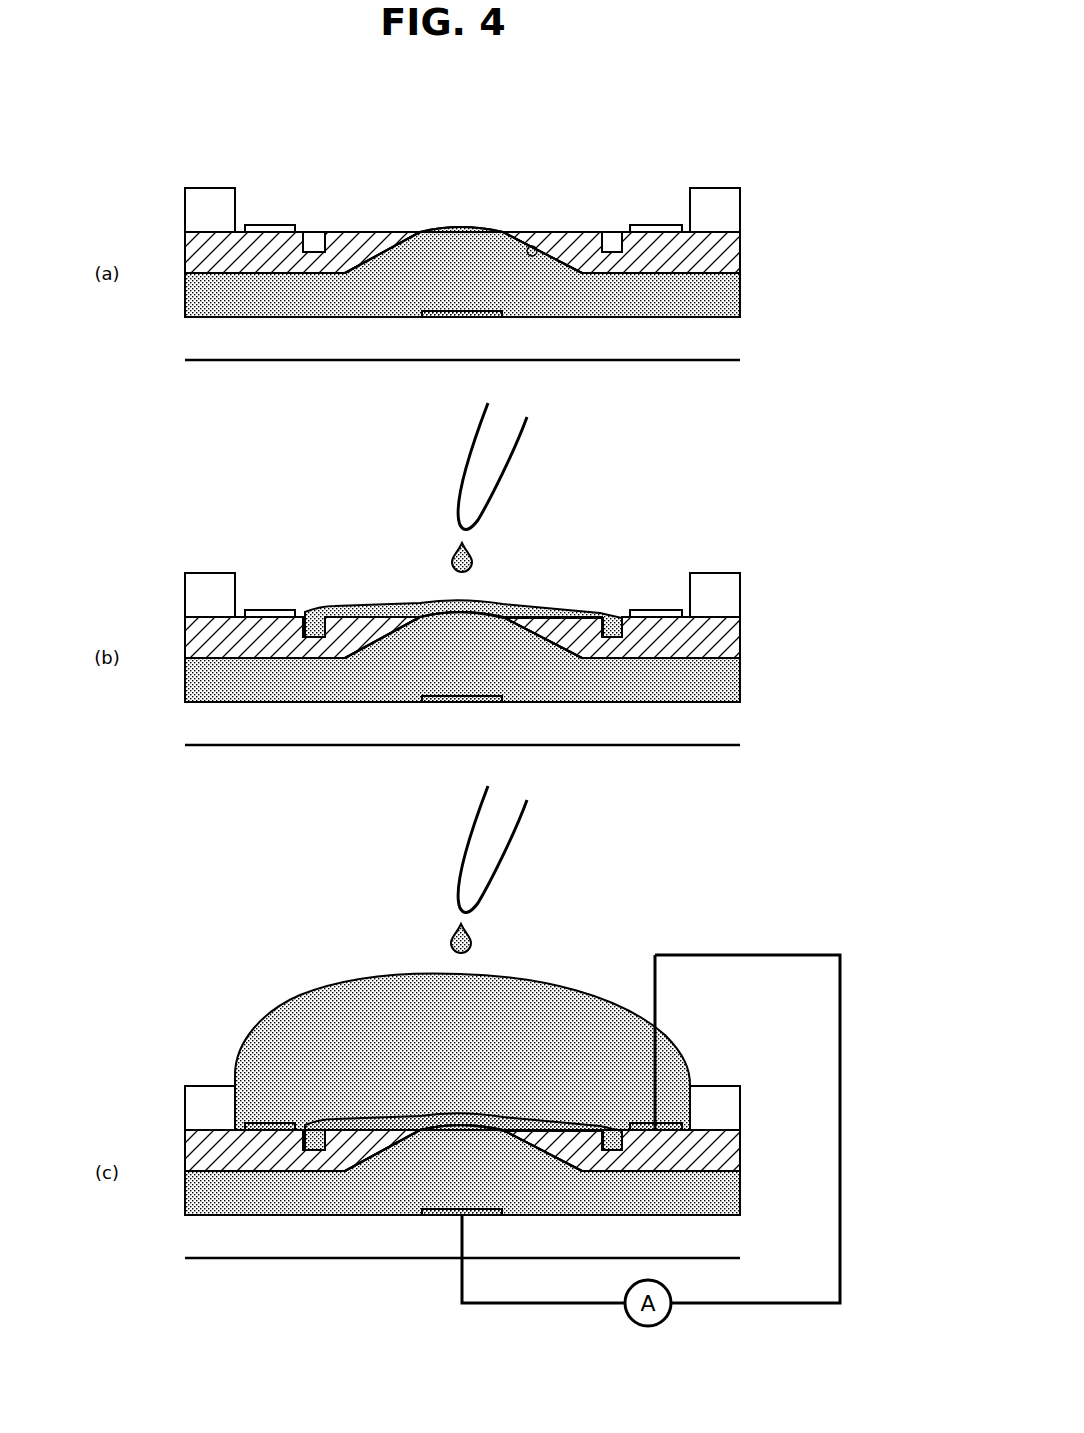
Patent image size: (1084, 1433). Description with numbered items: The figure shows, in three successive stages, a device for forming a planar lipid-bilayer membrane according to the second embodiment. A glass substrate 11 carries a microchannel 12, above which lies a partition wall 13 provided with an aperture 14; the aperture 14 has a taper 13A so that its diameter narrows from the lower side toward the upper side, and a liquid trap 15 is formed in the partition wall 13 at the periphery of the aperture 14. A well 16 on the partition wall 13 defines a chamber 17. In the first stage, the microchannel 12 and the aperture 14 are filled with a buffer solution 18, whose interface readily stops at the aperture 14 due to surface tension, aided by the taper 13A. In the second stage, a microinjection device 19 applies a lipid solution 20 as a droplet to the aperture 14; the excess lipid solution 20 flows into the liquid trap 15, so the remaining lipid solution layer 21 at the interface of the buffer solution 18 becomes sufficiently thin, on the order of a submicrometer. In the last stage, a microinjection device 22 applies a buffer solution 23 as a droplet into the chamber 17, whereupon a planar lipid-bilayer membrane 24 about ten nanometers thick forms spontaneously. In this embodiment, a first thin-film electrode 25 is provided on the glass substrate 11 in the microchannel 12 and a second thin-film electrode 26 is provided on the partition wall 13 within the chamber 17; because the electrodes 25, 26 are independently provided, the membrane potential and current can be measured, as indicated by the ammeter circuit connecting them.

The glass substrate 11 is at (720, 338).
The microchannel 12 is at (754, 290).
The partition wall 13 is at (718, 253).
The taper 13A is at (528, 245).
The aperture 14 is at (470, 250).
The liquid trap 15 is at (315, 238).
The well 16 is at (212, 200).
The chamber 17 is at (681, 163).
The buffer solution 18 is at (722, 297).
The microinjection device 19 is at (502, 445).
The lipid solution 20 is at (455, 553).
The lipid solution layer 21 is at (335, 608).
The microinjection device 22 is at (502, 828).
The buffer solution 23 is at (455, 937).
The planar lipid-bilayer membrane 24 is at (487, 1112).
The first thin-film electrode 25 is at (441, 310).
The second thin-film electrode 26 is at (265, 225).